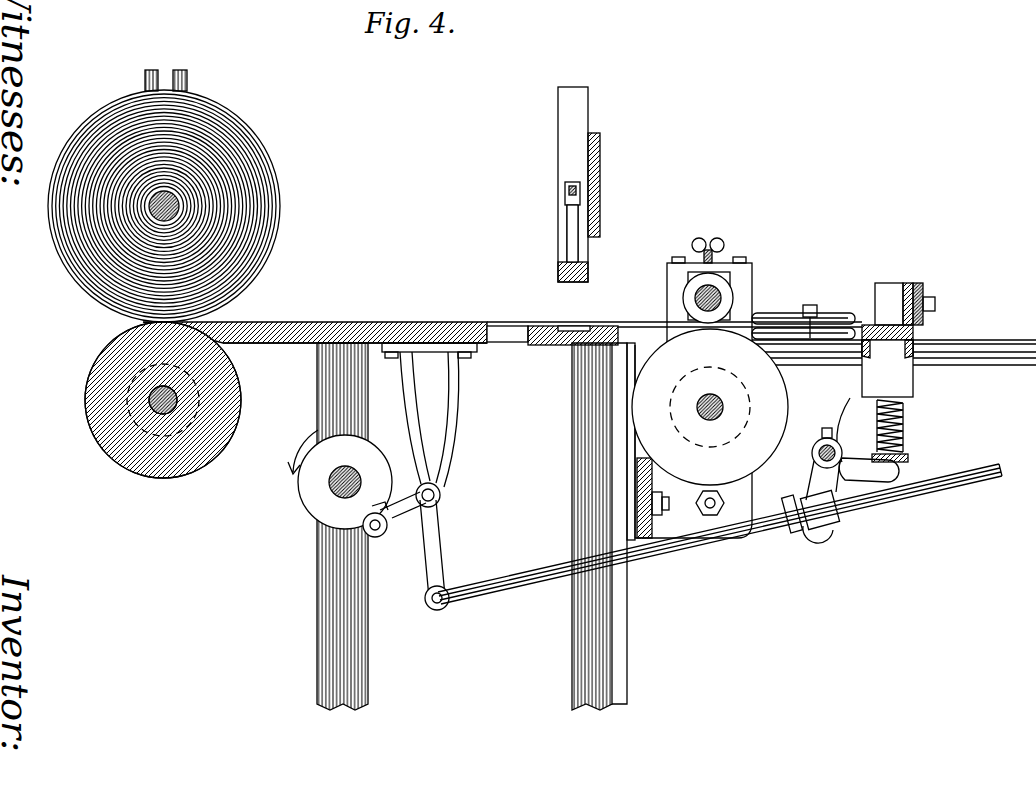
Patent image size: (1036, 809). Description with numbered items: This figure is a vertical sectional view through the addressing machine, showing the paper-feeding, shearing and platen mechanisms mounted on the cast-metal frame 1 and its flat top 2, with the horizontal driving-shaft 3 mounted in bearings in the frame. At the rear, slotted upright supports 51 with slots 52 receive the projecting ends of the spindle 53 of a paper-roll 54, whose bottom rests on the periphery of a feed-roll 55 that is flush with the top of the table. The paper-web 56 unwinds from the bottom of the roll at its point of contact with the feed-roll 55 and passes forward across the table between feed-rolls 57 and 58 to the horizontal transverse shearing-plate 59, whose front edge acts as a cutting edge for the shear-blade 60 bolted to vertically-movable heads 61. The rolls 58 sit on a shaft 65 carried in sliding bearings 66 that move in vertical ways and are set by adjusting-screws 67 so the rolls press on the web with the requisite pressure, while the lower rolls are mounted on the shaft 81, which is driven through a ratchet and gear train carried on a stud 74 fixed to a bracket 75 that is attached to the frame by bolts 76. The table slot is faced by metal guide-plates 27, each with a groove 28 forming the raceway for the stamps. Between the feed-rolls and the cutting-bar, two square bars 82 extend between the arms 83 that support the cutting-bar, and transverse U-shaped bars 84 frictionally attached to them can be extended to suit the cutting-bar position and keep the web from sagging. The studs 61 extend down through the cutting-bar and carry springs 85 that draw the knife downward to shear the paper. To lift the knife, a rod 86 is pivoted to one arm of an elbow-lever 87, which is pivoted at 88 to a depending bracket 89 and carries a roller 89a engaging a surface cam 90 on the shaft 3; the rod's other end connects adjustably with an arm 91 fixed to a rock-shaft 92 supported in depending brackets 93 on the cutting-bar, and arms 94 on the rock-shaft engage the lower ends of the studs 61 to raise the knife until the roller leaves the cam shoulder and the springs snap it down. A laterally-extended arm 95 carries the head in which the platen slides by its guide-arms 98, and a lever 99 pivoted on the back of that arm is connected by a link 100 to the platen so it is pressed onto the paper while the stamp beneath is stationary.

The frame 1 is at (317, 604).
The flat top 2 is at (305, 344).
The driving-shaft 3 is at (334, 488).
The guide-plates 27 is at (538, 326).
The groove 28 is at (572, 326).
The slotted upright supports 51 is at (145, 72).
The slots 52 is at (170, 77).
The spindle 53 is at (176, 202).
The paper-roll 54 is at (283, 218).
The feed-roll 55 is at (90, 372).
The paper-web 56 is at (312, 322).
The feed-rolls 57 is at (710, 407).
The feed-rolls 58 is at (684, 291).
The shearing-plate 59 is at (916, 340).
The shear-blade 60 is at (922, 290).
The vertically-movable heads 61 is at (890, 284).
The shaft 65 is at (721, 298).
The sliding bearings 66 is at (732, 275).
The adjusting-screws 67 is at (718, 233).
The stud 74 is at (711, 509).
The bracket 75 is at (748, 487).
The bolts 76 is at (669, 506).
The shaft 81 is at (698, 405).
The square bars 82 is at (811, 305).
The arms 83 is at (982, 357).
The U-shaped bars 84 is at (763, 333).
The springs 85 is at (908, 442).
The rod 86 is at (505, 590).
The elbow-lever 87 is at (438, 548).
The pivot 88 is at (440, 494).
The depending bracket 89 is at (440, 425).
The roller 89a is at (379, 532).
The surface cam 90 is at (365, 458).
The arm 91 is at (812, 472).
The rock-shaft 92 is at (818, 440).
The depending brackets 93 is at (830, 440).
The arms 94 is at (900, 471).
The arm 95 is at (601, 142).
The guide-arms 98 is at (558, 114).
The lever 99 is at (566, 194).
The link 100 is at (568, 236).